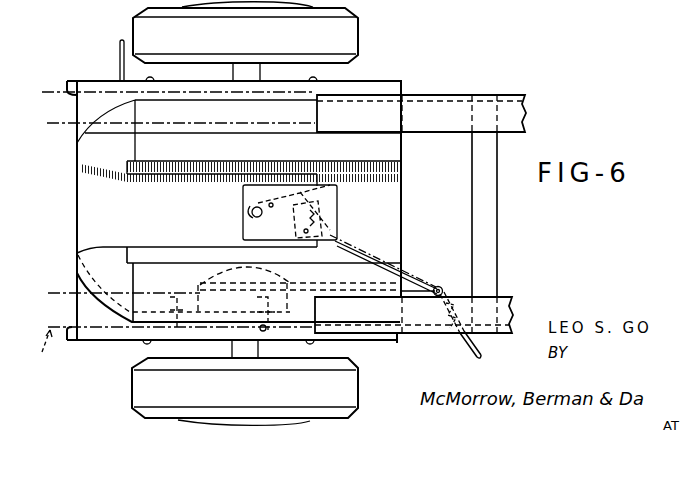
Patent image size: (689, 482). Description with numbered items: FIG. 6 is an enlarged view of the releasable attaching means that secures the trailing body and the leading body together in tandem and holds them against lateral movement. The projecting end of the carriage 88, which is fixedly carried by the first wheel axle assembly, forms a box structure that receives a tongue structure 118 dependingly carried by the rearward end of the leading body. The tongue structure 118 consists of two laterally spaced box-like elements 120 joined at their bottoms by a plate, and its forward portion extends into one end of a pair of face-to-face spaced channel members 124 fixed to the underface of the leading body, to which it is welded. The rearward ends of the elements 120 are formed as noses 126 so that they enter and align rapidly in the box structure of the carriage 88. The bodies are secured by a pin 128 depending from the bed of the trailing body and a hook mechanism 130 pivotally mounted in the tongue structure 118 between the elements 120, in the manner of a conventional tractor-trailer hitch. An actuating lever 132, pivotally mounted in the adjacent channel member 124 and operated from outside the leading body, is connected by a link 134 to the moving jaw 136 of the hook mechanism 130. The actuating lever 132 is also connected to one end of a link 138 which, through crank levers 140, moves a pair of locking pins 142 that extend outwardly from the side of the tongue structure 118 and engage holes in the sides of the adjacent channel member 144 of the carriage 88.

The carriage 88 is at (41, 351).
The tongue structure 118 is at (279, 96).
The box-like elements 120 is at (224, 153).
The channel members 124 is at (440, 108).
The noses 126 is at (75, 152).
The pin 128 is at (250, 214).
The hook mechanism 130 is at (297, 185).
The actuating lever 132 is at (460, 340).
The link 134 is at (405, 272).
The moving jaw 136 is at (339, 188).
The link 138 is at (439, 287).
The crank levers 140 is at (299, 288).
The locking pins 142 is at (260, 329).
The channel member 144 is at (64, 342).